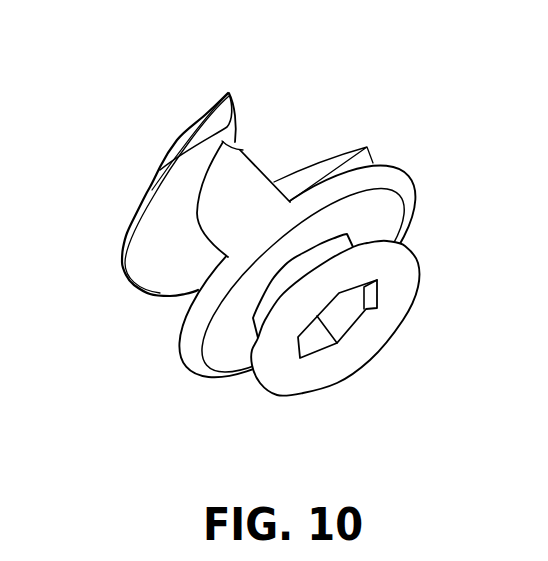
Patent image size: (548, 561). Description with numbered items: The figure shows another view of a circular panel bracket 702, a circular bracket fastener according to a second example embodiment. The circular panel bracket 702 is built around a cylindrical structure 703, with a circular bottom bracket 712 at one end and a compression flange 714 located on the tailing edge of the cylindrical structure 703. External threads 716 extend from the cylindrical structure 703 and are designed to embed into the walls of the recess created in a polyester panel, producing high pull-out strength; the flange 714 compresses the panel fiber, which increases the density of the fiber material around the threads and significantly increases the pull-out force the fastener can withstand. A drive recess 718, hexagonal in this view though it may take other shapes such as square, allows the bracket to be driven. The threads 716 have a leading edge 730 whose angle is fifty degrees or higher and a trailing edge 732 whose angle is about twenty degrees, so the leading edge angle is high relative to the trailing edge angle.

The circular panel bracket 702 is at (271, 222).
The cylindrical structure 703 is at (243, 170).
The circular bottom bracket 712 is at (416, 254).
The compression flange 714 is at (391, 176).
The external threads 716 is at (133, 245).
The drive recess 718 is at (343, 313).
The leading edge 730 is at (233, 93).
The trailing edge 732 is at (372, 150).